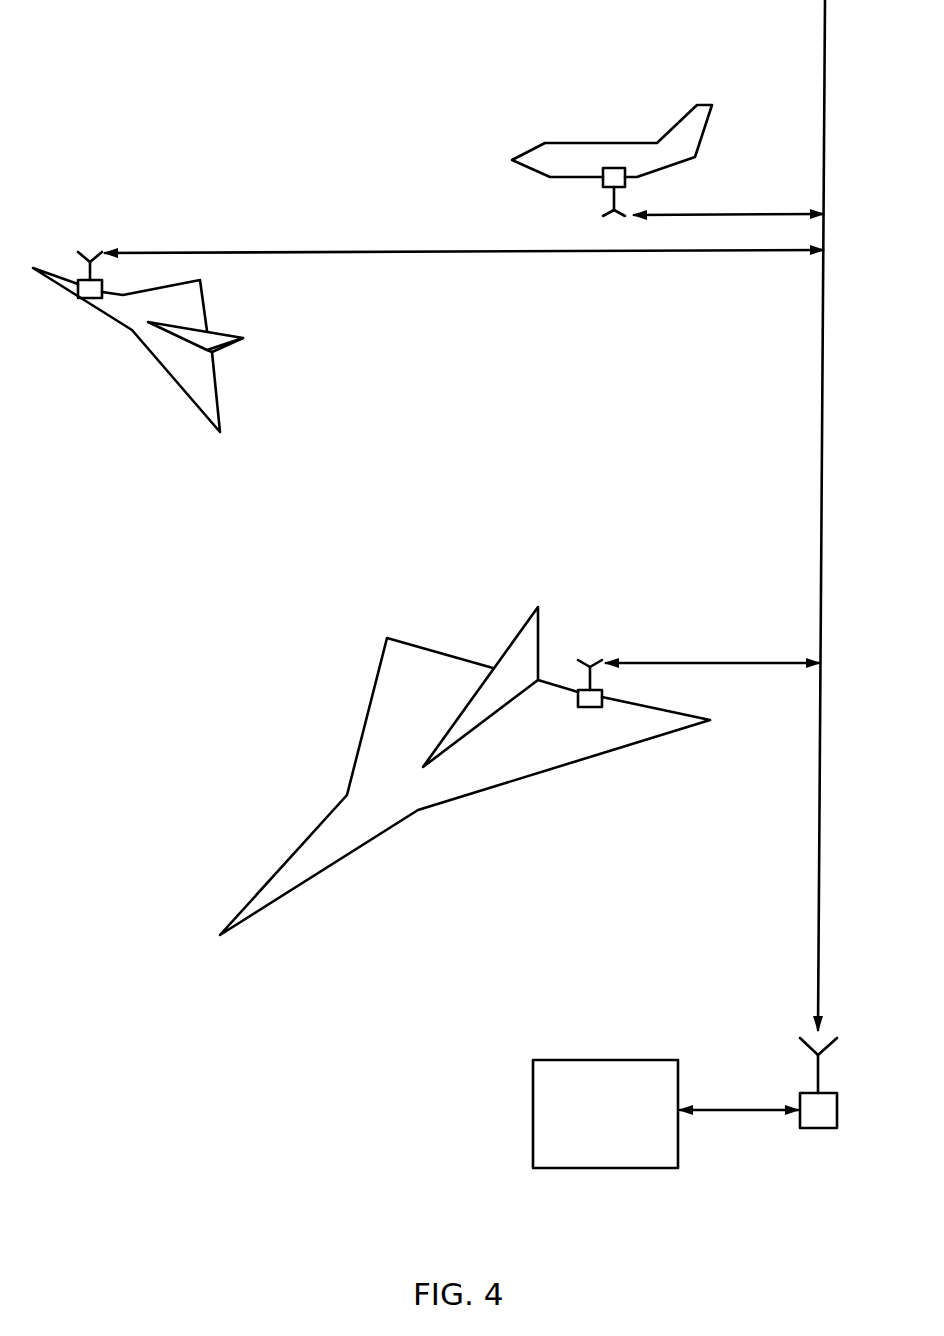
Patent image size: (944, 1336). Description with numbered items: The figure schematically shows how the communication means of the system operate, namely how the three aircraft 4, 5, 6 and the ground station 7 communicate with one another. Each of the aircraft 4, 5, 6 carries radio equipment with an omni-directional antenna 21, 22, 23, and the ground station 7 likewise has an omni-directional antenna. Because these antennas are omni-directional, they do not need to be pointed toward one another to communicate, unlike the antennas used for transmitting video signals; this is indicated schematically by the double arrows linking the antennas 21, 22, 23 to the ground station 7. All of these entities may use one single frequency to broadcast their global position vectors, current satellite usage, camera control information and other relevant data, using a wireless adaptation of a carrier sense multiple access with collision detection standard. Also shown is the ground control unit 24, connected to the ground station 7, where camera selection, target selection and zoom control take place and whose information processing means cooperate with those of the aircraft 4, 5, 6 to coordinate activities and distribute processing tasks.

The aircraft 4 is at (143, 350).
The aircraft 5 is at (465, 771).
The aircraft 6 is at (621, 141).
The ground station 7 is at (818, 1104).
The omni-directional antenna 21 is at (71, 293).
The omni-directional antenna 22 is at (590, 700).
The omni-directional antenna 23 is at (591, 192).
The ground control unit 24 is at (605, 1114).